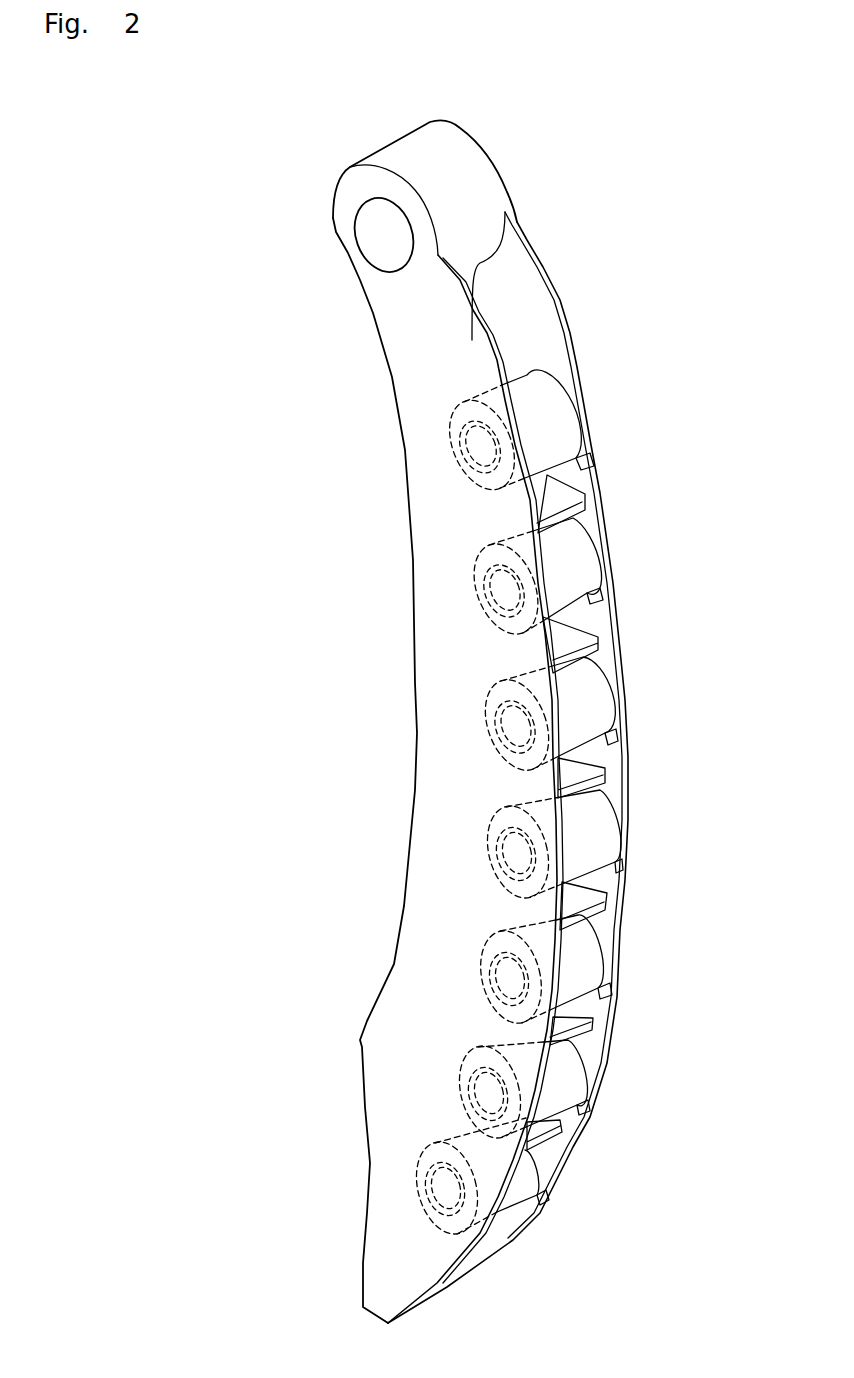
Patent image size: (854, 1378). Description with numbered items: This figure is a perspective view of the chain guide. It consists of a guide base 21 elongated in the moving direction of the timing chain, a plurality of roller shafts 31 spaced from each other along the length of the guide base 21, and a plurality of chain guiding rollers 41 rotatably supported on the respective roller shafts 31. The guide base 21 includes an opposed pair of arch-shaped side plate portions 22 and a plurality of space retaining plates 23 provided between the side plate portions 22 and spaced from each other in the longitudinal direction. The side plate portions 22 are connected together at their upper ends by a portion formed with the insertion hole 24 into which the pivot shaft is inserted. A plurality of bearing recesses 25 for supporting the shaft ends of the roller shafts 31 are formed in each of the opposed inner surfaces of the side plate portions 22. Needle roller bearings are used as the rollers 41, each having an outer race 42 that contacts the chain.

The guide base 21 is at (450, 682).
The side plate portions 22 is at (543, 307).
The space retaining plates 23 is at (580, 492).
The insertion hole 24 is at (382, 228).
The bearing recesses 25 is at (593, 453).
The roller shafts 31 is at (495, 585).
The chain guiding rollers 41 is at (582, 807).
The outer race 42 is at (560, 425).